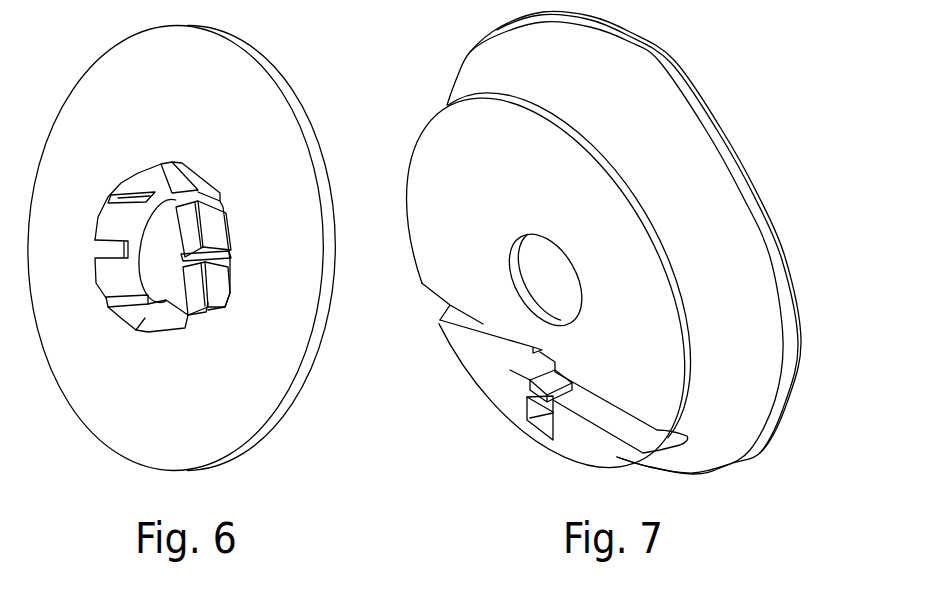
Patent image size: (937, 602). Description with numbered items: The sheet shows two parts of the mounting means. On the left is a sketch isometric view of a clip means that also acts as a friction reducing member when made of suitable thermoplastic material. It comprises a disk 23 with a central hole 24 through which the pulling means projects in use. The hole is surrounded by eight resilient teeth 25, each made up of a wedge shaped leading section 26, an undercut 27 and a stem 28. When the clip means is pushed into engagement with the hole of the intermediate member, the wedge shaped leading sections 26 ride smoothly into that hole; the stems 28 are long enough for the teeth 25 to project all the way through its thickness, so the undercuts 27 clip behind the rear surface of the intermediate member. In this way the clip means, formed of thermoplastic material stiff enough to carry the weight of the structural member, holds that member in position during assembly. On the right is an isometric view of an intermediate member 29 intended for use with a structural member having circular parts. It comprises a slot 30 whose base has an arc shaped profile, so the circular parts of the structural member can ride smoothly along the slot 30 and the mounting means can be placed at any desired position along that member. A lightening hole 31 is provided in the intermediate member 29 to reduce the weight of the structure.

In FIG. 6, the disk 23 is at (217, 442).
In FIG. 6, the central hole 24 is at (170, 228).
In FIG. 6, the resilient teeth 25 is at (193, 242).
In FIG. 6, the wedge shaped leading section 26 is at (205, 312).
In FIG. 6, the undercut 27 is at (210, 273).
In FIG. 6, the stem 28 is at (213, 293).
In FIG. 7, the intermediate member 29 is at (742, 223).
In FIG. 7, the slot 30 is at (617, 423).
In FIG. 7, the lightening hole 31 is at (538, 425).